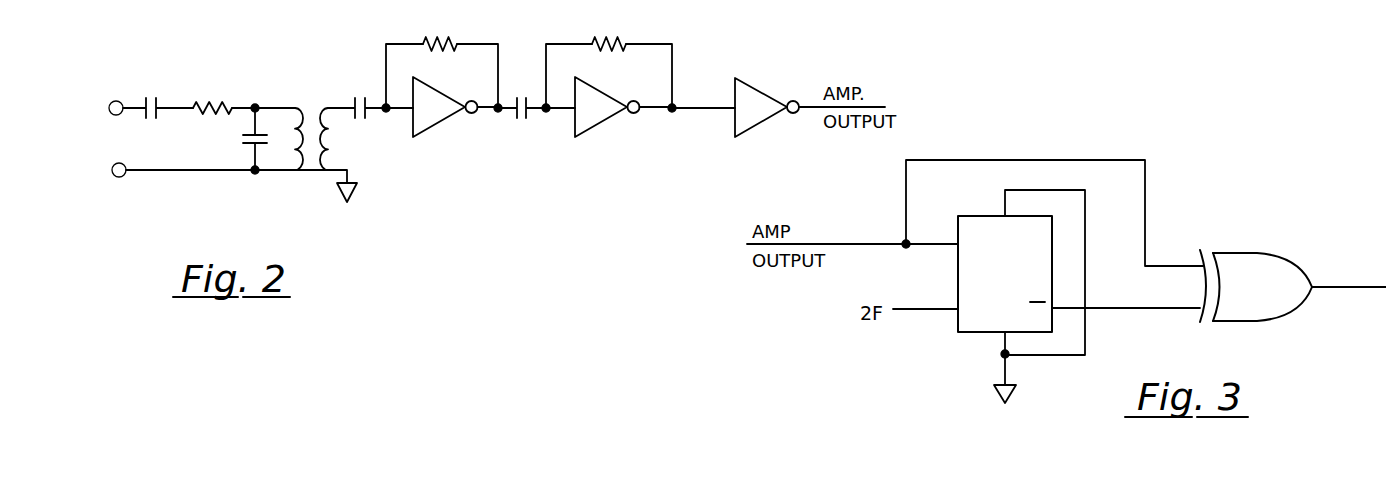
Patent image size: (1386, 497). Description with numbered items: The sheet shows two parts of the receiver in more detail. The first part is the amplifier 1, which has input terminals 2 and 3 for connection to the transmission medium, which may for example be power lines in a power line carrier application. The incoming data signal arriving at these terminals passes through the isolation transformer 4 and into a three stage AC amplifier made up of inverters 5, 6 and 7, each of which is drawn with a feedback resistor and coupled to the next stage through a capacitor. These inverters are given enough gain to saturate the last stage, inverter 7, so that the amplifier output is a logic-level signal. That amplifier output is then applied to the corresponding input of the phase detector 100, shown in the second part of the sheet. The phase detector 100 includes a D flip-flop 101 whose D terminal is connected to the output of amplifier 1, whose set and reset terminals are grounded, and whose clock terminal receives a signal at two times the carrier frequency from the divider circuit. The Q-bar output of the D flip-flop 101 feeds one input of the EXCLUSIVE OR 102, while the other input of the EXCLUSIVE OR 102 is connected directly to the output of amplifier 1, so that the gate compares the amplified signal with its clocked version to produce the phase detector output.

In FIG. 2, the amplifier 1 is at (308, 82).
In FIG. 2, the input terminal 2 is at (108, 103).
In FIG. 2, the input terminal 3 is at (112, 167).
In FIG. 2, the isolation transformer 4 is at (308, 180).
In FIG. 2, the inverter 5 is at (450, 137).
In FIG. 2, the inverter 6 is at (597, 130).
In FIG. 2, the inverter 7 is at (757, 130).
In FIG. 3, the phase detector 100 is at (1228, 176).
In FIG. 3, the D flip-flop 101 is at (958, 327).
In FIG. 3, the EXCLUSIVE OR 102 is at (1266, 328).